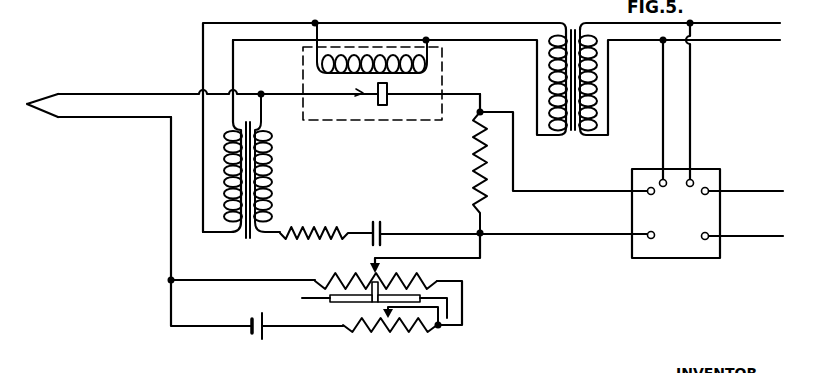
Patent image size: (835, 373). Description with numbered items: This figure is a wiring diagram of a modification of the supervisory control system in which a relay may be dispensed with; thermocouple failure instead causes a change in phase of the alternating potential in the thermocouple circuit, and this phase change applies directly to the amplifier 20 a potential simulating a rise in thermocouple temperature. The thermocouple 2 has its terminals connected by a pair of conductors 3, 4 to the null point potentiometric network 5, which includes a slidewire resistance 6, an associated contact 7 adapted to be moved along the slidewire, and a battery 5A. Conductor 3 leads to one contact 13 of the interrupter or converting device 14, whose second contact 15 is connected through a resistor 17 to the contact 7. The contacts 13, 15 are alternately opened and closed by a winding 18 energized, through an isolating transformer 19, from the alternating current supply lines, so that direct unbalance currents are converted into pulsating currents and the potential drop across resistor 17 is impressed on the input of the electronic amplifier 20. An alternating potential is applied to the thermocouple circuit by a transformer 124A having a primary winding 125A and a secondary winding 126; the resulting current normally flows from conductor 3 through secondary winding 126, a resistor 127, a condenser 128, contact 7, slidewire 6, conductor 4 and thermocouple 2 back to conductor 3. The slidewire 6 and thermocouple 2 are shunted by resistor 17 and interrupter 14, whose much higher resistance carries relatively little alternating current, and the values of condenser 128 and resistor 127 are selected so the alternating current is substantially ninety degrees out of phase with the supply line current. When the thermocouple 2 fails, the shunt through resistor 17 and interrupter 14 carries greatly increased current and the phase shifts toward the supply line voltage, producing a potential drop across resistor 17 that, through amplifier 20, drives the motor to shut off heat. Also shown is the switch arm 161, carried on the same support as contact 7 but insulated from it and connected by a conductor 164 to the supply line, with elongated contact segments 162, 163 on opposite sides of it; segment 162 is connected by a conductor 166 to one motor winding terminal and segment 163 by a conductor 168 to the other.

The thermocouple 2 is at (42, 112).
The conductor 3 is at (111, 93).
The conductor 4 is at (104, 118).
The null point potentiometric network 5 is at (216, 284).
The battery 5A is at (257, 340).
The slidewire resistance 6 is at (337, 274).
The contact 7 is at (372, 266).
The contact 13 is at (361, 100).
The interrupter 14 is at (304, 80).
The second contact 15 is at (384, 106).
The resistor 17 is at (475, 170).
The winding 18 is at (408, 74).
The isolating transformer 19 is at (572, 30).
The electronic amplifier 20 is at (690, 262).
The transformer 124A is at (247, 238).
The primary winding 125A is at (232, 182).
The secondary winding 126 is at (272, 200).
The resistor 127 is at (326, 232).
The condenser 128 is at (378, 222).
The switch arm 161 is at (373, 304).
The contact segment 162 is at (400, 295).
The contact segment 163 is at (356, 302).
The conductor 164 is at (383, 314).
The conductor 166 is at (450, 313).
The conductor 168 is at (310, 298).